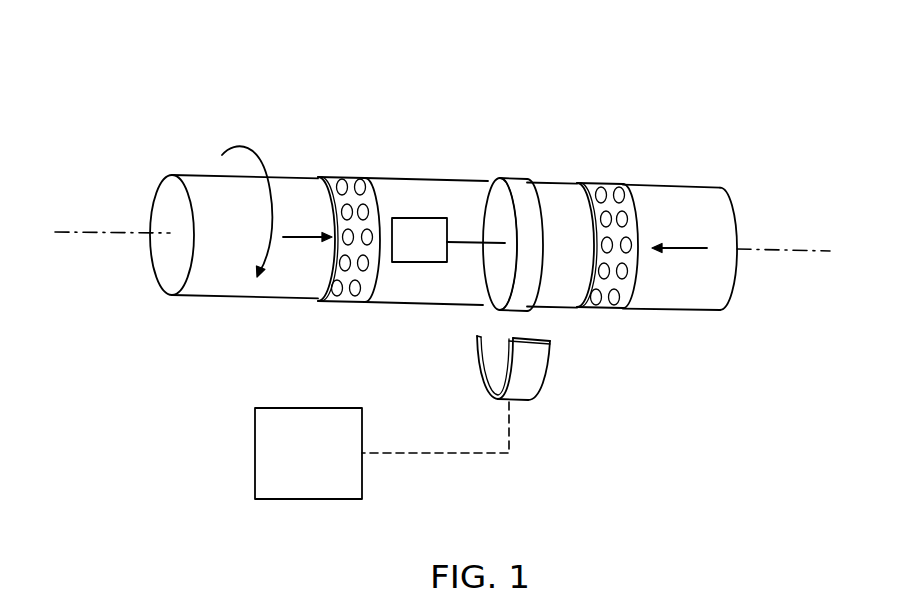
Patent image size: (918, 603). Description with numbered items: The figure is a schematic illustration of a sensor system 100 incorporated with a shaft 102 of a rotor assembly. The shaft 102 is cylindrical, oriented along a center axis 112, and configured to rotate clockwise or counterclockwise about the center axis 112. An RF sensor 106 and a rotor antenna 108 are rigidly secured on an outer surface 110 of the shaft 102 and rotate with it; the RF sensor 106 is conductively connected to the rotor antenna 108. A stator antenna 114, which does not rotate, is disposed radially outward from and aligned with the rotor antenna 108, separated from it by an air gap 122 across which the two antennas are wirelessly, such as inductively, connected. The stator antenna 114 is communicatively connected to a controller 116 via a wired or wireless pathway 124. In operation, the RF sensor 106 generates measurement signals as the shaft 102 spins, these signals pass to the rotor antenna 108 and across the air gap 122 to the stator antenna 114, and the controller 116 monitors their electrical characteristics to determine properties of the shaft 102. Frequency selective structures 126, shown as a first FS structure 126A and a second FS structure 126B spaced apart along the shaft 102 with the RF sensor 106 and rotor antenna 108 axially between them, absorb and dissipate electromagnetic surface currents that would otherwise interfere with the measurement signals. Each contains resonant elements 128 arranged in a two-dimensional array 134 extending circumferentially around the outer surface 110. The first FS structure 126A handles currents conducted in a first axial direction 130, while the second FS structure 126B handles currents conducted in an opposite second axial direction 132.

The sensor system 100 is at (522, 66).
The shaft 102 is at (303, 188).
The RF sensor 106 is at (415, 217).
The rotor antenna 108 is at (528, 230).
The outer surface 110 is at (463, 195).
The center axis 112 is at (107, 230).
The stator antenna 114 is at (528, 390).
The controller 116 is at (255, 450).
The air gap 122 is at (526, 325).
The wired or wireless pathway 124 is at (441, 455).
The frequency selective structures 126 is at (341, 241).
The first FS structure 126A is at (337, 307).
The second FS structure 126B is at (602, 313).
The resonant elements 128 is at (370, 255).
The first axial direction 130 is at (297, 237).
The second axial direction 132 is at (692, 248).
The two-dimensional array 134 is at (612, 178).